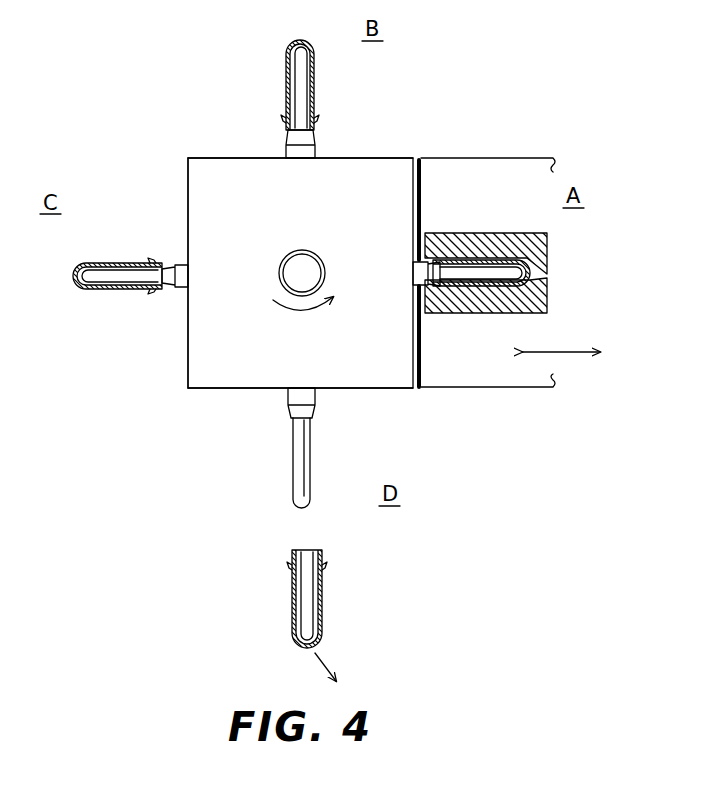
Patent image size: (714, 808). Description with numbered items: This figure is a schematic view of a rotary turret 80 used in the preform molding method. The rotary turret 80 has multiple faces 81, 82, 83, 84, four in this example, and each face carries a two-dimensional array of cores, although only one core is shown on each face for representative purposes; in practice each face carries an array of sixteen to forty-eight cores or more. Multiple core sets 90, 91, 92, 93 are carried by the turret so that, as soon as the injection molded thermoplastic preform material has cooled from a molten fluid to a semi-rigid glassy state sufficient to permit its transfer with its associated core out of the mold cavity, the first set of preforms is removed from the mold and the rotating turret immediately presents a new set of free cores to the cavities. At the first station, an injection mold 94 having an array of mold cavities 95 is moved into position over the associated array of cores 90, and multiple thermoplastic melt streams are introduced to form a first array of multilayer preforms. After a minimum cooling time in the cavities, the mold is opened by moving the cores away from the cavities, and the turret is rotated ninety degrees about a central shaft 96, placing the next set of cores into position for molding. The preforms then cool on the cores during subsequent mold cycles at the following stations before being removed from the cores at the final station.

The rotary turret 80 is at (376, 221).
The face of the rotary turret 81 is at (420, 172).
The face of the rotary turret 82 is at (228, 158).
The face of the rotary turret 83 is at (188, 358).
The face of the rotary turret 84 is at (393, 390).
The core set 90 is at (471, 275).
The core set 91 is at (301, 82).
The core set 92 is at (113, 275).
The core set 93 is at (305, 470).
The injection mold 94 is at (513, 157).
The mold cavities 95 is at (513, 233).
The central shaft 96 is at (296, 262).